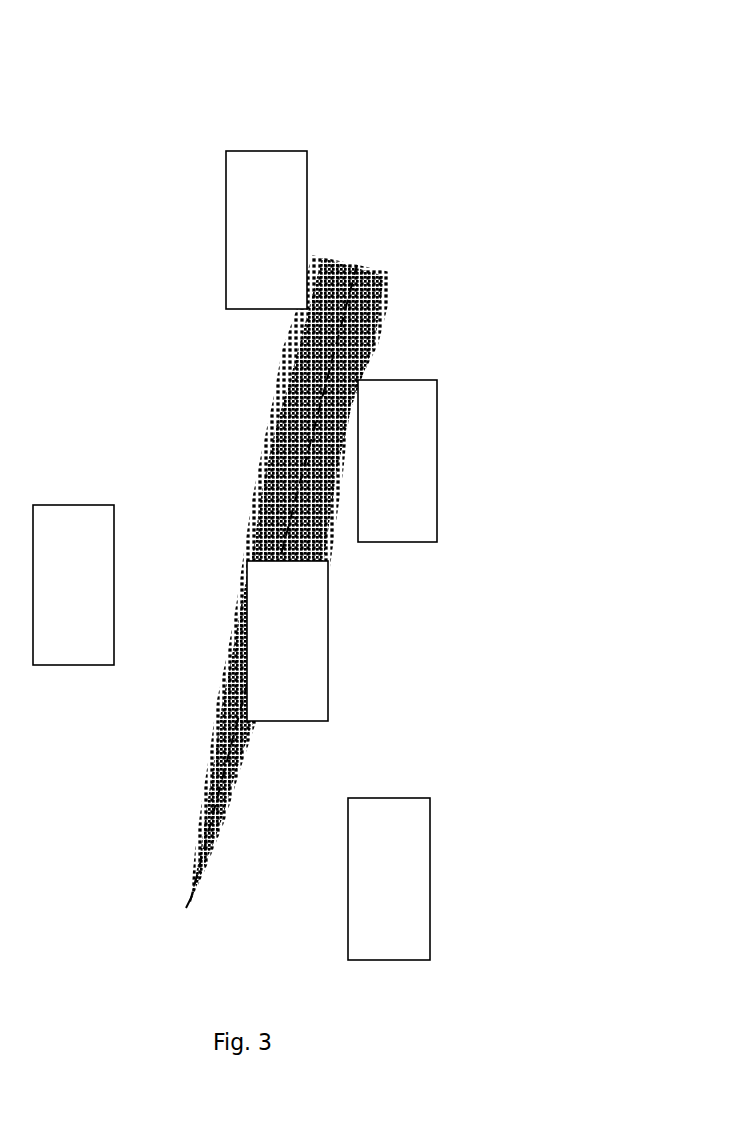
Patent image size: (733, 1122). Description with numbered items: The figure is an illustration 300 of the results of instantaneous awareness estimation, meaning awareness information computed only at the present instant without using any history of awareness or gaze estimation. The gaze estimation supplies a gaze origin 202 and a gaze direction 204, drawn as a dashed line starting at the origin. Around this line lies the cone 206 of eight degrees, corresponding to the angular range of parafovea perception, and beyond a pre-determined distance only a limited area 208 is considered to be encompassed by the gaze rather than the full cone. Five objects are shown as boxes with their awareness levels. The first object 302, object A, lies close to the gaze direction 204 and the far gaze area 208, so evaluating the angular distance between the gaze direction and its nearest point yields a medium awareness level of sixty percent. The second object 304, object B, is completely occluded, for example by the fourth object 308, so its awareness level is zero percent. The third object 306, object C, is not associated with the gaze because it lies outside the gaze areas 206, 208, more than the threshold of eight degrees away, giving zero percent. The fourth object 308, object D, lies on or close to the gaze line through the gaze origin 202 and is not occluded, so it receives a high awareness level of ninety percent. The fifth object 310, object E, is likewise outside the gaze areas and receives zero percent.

The illustration of results of instantaneous awareness estimation 300 is at (672, 37).
The gaze origin 202 is at (193, 890).
The gaze direction 204 is at (357, 267).
The cone 206 is at (230, 795).
The limited area 208 is at (360, 347).
The first object 302 is at (290, 185).
The second object 304 is at (422, 390).
The third object 306 is at (102, 542).
The fourth object 308 is at (317, 678).
The fifth object 310 is at (420, 820).